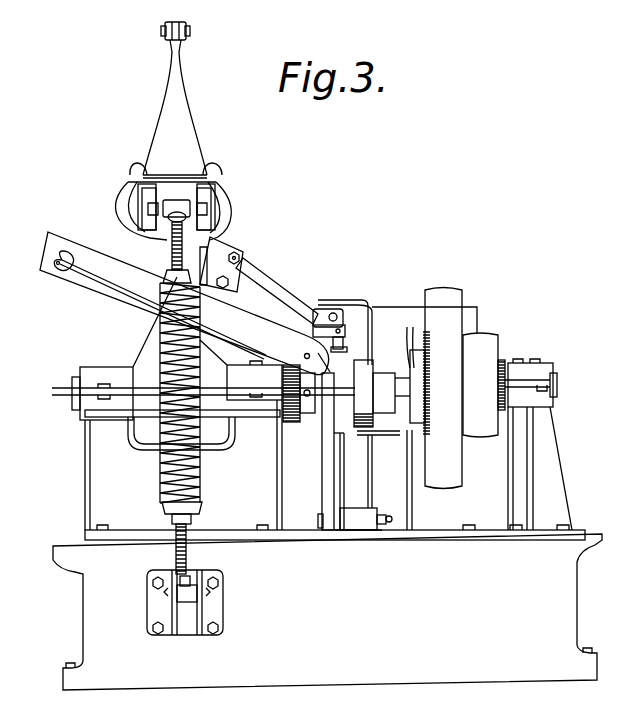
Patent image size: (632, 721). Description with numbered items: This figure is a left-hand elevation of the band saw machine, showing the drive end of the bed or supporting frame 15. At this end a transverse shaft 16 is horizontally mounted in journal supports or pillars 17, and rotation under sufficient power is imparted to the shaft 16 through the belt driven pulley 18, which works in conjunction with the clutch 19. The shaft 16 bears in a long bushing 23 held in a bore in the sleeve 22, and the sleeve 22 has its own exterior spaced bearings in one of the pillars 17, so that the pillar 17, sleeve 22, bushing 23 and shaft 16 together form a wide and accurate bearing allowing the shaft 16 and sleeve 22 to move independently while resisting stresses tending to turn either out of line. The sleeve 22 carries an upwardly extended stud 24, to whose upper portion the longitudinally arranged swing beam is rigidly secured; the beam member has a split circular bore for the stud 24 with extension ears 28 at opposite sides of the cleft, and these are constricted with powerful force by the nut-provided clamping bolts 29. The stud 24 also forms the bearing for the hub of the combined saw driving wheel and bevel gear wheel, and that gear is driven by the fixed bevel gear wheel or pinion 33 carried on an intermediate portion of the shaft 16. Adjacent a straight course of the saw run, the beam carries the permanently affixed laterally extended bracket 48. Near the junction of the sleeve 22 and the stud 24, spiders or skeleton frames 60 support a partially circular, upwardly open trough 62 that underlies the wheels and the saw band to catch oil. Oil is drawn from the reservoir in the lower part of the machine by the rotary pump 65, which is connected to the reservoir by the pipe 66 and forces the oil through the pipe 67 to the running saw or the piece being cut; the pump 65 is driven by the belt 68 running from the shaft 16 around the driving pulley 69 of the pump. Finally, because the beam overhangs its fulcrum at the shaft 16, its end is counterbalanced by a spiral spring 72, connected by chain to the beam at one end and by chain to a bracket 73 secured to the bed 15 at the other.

The bed or supporting frame 15 is at (327, 612).
The transverse shaft 16 is at (72, 393).
The journal supports or pillars 17 is at (326, 403).
The belt driven pulley 18 is at (464, 388).
The clutch 19 is at (402, 384).
The sleeve 22 is at (145, 382).
The long bushing 23 is at (206, 193).
The stud 24 is at (219, 239).
The extension ears 28 is at (240, 274).
The nut-provided clamping bolts 29 is at (239, 257).
The fixed bevel gear wheel or pinion 33 is at (300, 423).
The laterally extended bracket 48 is at (258, 288).
The spiders or skeleton frames 60 is at (131, 317).
The trough 62 is at (185, 303).
The pump 65 is at (362, 524).
The pipe 66 is at (379, 515).
The pipe 67 is at (377, 455).
The belt 68 is at (327, 479).
The driving pulley 69 is at (318, 522).
The spiral spring 72 is at (202, 480).
The bracket 73 is at (172, 609).